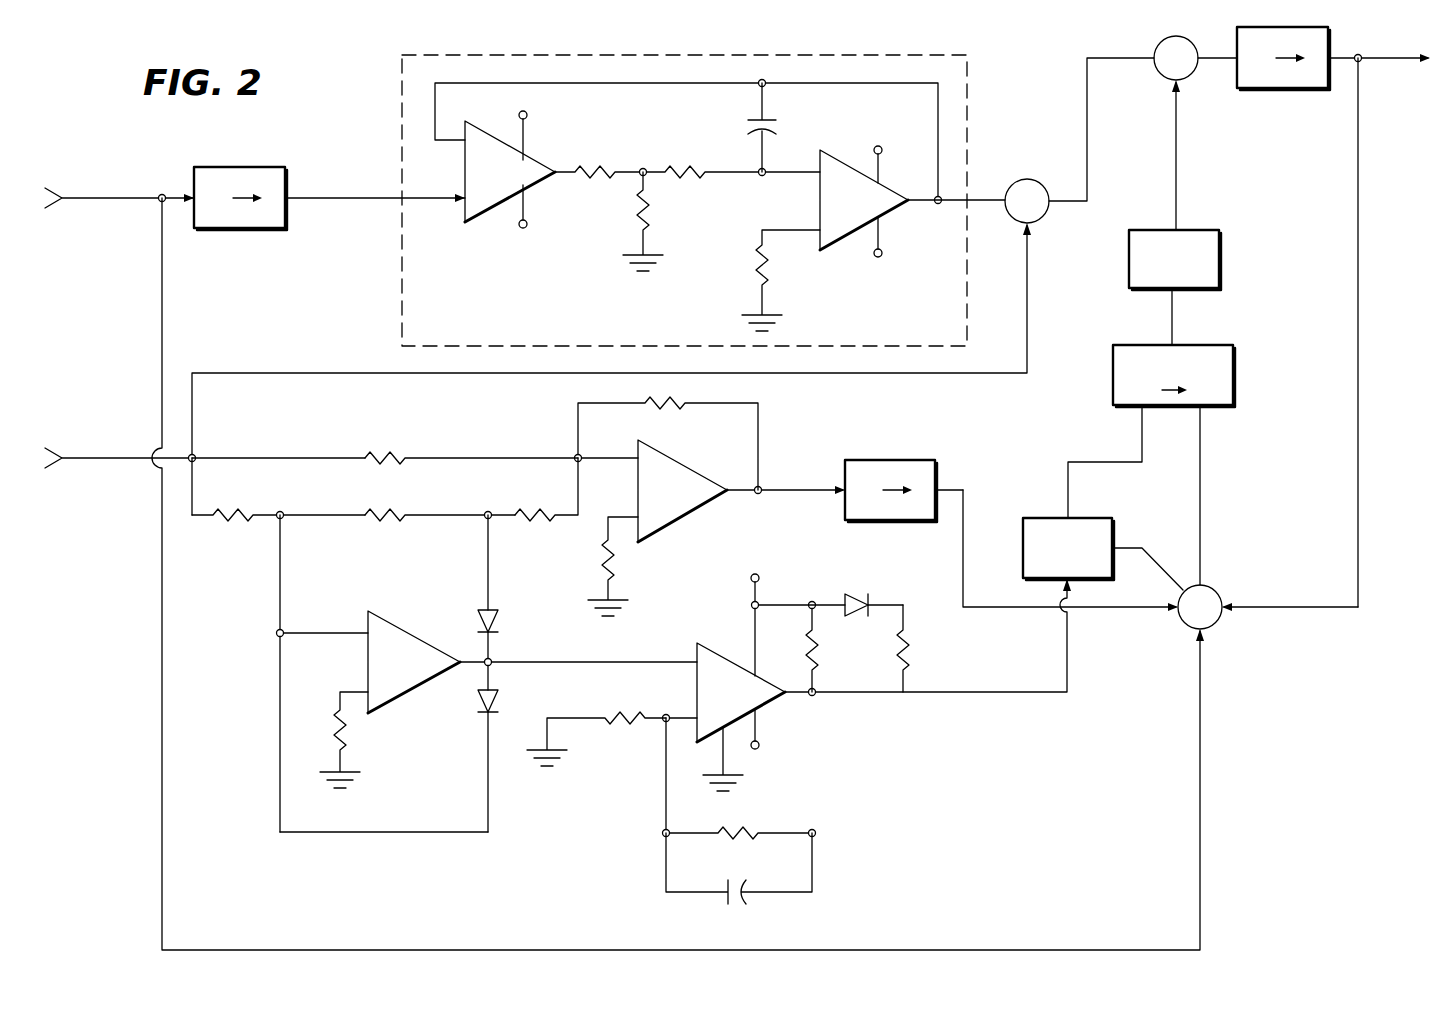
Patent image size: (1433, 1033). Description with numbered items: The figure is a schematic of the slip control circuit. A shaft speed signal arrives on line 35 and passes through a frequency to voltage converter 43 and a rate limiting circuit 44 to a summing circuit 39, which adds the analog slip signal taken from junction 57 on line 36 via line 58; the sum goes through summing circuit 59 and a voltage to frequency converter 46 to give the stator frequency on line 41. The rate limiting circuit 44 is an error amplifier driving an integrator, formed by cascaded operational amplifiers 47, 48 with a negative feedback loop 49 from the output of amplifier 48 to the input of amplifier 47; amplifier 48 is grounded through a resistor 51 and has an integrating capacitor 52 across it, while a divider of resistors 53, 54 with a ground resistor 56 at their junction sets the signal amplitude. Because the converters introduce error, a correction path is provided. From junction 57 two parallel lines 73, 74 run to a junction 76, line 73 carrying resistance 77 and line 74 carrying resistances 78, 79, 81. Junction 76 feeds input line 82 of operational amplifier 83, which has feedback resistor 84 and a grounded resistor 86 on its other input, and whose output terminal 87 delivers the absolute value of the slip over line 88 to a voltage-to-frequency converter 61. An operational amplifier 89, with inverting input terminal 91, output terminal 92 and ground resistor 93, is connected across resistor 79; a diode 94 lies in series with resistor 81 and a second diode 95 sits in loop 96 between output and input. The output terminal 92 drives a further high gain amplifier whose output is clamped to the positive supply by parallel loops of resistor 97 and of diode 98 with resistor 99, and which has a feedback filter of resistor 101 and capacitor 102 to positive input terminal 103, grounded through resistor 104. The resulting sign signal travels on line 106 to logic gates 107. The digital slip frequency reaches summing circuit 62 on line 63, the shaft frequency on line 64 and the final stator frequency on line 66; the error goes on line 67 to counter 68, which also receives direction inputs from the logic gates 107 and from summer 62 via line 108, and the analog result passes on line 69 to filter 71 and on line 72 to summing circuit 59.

The line 35 is at (108, 212).
The line 36 is at (110, 468).
The summing circuit 39 is at (1038, 181).
The line 41 is at (1402, 62).
The frequency to voltage converter 43 is at (246, 230).
The rate limiting circuit 44 is at (580, 305).
The voltage to frequency converter 46 is at (1282, 90).
The operational amplifier 47 is at (484, 218).
The operational amplifier 48 is at (850, 246).
The negative feedback loop 49 is at (594, 85).
The resistor 51 is at (752, 260).
The capacitor 52 is at (740, 116).
The resistor 53 is at (604, 170).
The resistor 54 is at (676, 170).
The resistor 56 is at (655, 224).
The junction 57 is at (200, 454).
The line 58 is at (316, 370).
The summing circuit 59 is at (1160, 76).
The voltage-to-frequency converter 61 is at (886, 460).
The summing circuit 62 is at (1216, 590).
The line 63 is at (1134, 614).
The line 64 is at (1204, 760).
The line 66 is at (1292, 606).
The line 67 is at (1204, 478).
The counter 68 is at (1240, 370).
The line 69 is at (1178, 322).
The filter 71 is at (1224, 240).
The line 72 is at (1178, 172).
The line 73 is at (294, 455).
The line 74 is at (200, 478).
The junction 76 is at (572, 454).
The resistance 77 is at (390, 452).
The resistance 78 is at (246, 526).
The resistance 79 is at (362, 506).
The resistance 81 is at (520, 506).
The input line 82 is at (607, 455).
The operational amplifier 83 is at (687, 503).
The feedback resistor 84 is at (688, 410).
The resistor 86 is at (602, 560).
The output terminal 87 is at (752, 498).
The line 88 is at (812, 498).
The operational amplifier 89 is at (421, 674).
The inverting input terminal 91 is at (274, 633).
The output terminal 92 is at (500, 660).
The ground resistor 93 is at (334, 730).
The diode 94 is at (478, 616).
The diode 95 is at (476, 708).
The loop 96 is at (404, 830).
The resistor 97 is at (822, 646).
The diode 98 is at (874, 598).
The resistor 99 is at (916, 656).
The resistor 101 is at (758, 825).
The capacitor 102 is at (724, 888).
The positive input terminal 103 is at (660, 714).
The ground resistor 104 is at (613, 730).
The line 106 is at (990, 698).
The logic gates 107 is at (1036, 515).
The line 108 is at (1134, 540).